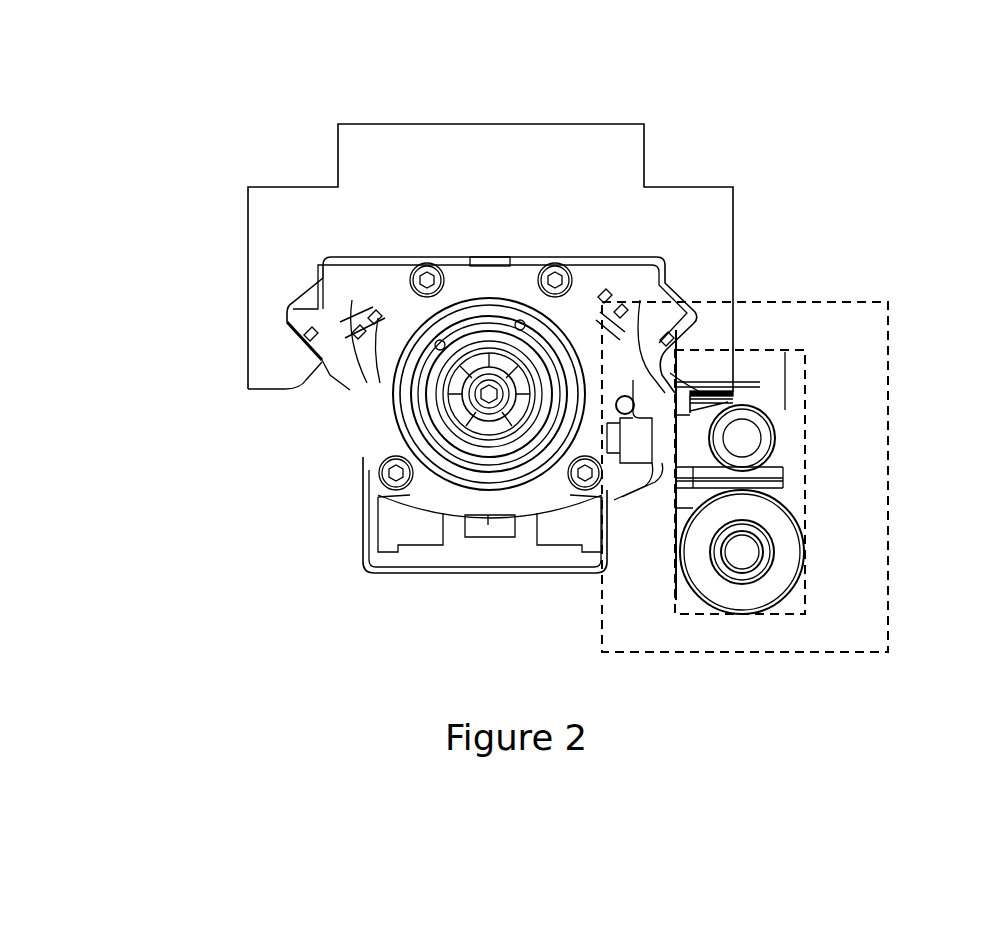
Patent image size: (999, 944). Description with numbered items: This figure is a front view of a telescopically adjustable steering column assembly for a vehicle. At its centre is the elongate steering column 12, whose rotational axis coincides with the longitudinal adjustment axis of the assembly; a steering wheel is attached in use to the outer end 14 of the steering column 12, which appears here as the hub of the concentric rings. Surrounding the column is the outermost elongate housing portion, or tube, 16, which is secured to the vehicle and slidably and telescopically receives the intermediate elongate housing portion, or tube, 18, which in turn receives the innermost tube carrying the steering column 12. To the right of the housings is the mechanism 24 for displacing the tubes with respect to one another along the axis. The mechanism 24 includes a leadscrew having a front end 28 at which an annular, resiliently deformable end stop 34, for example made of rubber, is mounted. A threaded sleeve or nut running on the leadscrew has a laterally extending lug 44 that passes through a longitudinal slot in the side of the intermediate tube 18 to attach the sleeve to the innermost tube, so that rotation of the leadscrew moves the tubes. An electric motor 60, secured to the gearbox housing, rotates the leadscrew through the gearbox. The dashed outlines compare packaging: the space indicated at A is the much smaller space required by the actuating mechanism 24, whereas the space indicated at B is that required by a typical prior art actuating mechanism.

The elongate steering column 12 is at (440, 385).
The outer end 14 is at (487, 397).
The outermost elongate housing portion 16 is at (377, 124).
The intermediate elongate housing portion 18 is at (303, 305).
The mechanism 24 is at (823, 449).
The front end 28 is at (783, 477).
The end stop 34 is at (770, 422).
The lug 44 is at (677, 503).
The electric motor 60 is at (805, 555).
The packaging space A is at (808, 388).
The packaging space B is at (888, 420).